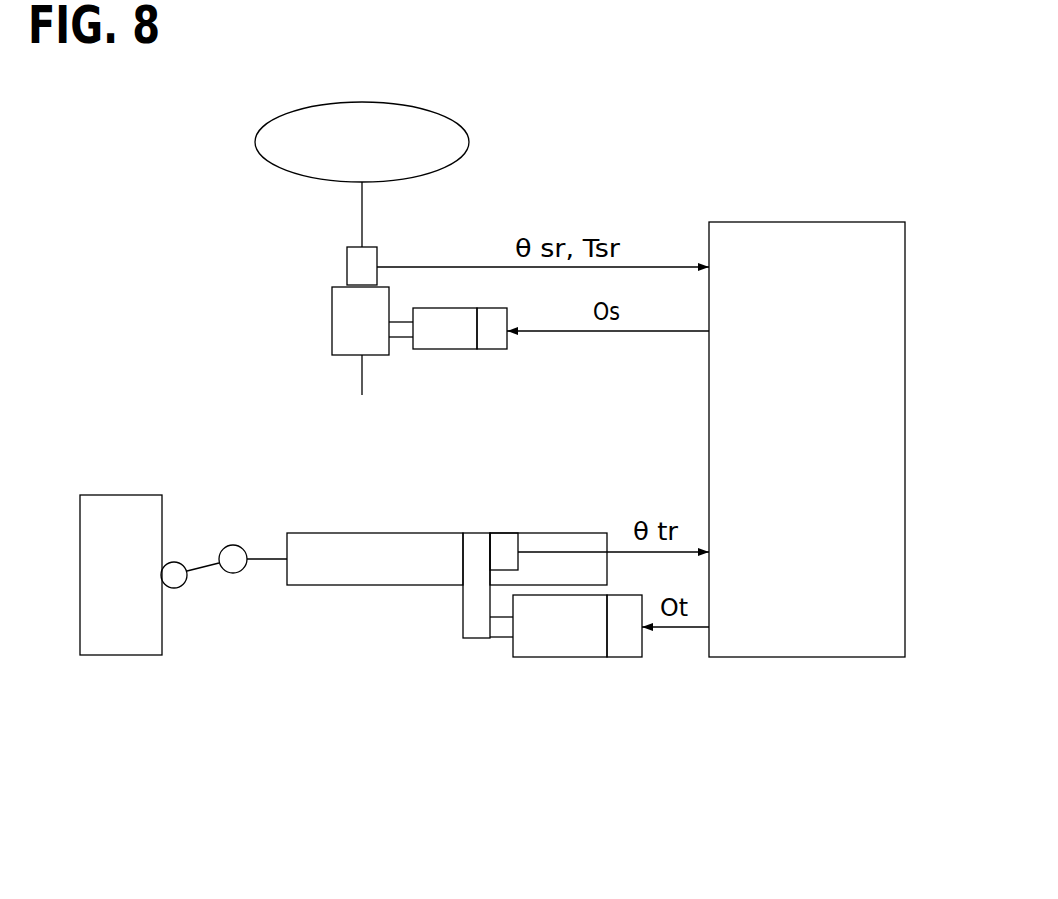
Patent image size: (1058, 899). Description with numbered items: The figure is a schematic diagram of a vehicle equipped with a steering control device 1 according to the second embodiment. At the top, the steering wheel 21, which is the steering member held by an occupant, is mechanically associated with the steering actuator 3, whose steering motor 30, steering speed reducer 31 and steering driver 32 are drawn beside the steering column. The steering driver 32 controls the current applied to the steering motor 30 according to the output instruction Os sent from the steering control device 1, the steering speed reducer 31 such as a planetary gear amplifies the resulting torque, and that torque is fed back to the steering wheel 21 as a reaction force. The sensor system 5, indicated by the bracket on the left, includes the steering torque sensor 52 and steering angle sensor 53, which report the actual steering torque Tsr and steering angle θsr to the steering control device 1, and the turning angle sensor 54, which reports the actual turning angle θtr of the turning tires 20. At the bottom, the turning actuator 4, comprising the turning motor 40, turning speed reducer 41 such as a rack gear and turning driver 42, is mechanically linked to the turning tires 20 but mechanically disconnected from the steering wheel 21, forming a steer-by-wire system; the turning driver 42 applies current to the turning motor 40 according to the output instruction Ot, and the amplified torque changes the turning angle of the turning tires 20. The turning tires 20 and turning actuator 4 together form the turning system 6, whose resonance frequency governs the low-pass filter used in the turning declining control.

The steering control device 1 is at (885, 222).
The steering actuator 3 is at (473, 362).
The turning actuator 4 is at (521, 630).
The sensor system 5 is at (142, 263).
The turning system 6 is at (312, 606).
The turning tires 20 is at (80, 520).
The steering wheel 21 is at (442, 112).
The steering motor 30 is at (452, 349).
The steering speed reducer 31 is at (332, 322).
The steering driver 32 is at (490, 349).
The turning motor 40 is at (570, 657).
The turning speed reducer 41 is at (463, 610).
The turning driver 42 is at (625, 657).
The steering torque sensor 52 is at (347, 271).
The steering angle sensor 53 is at (261, 271).
The turning angle sensor 54 is at (506, 533).